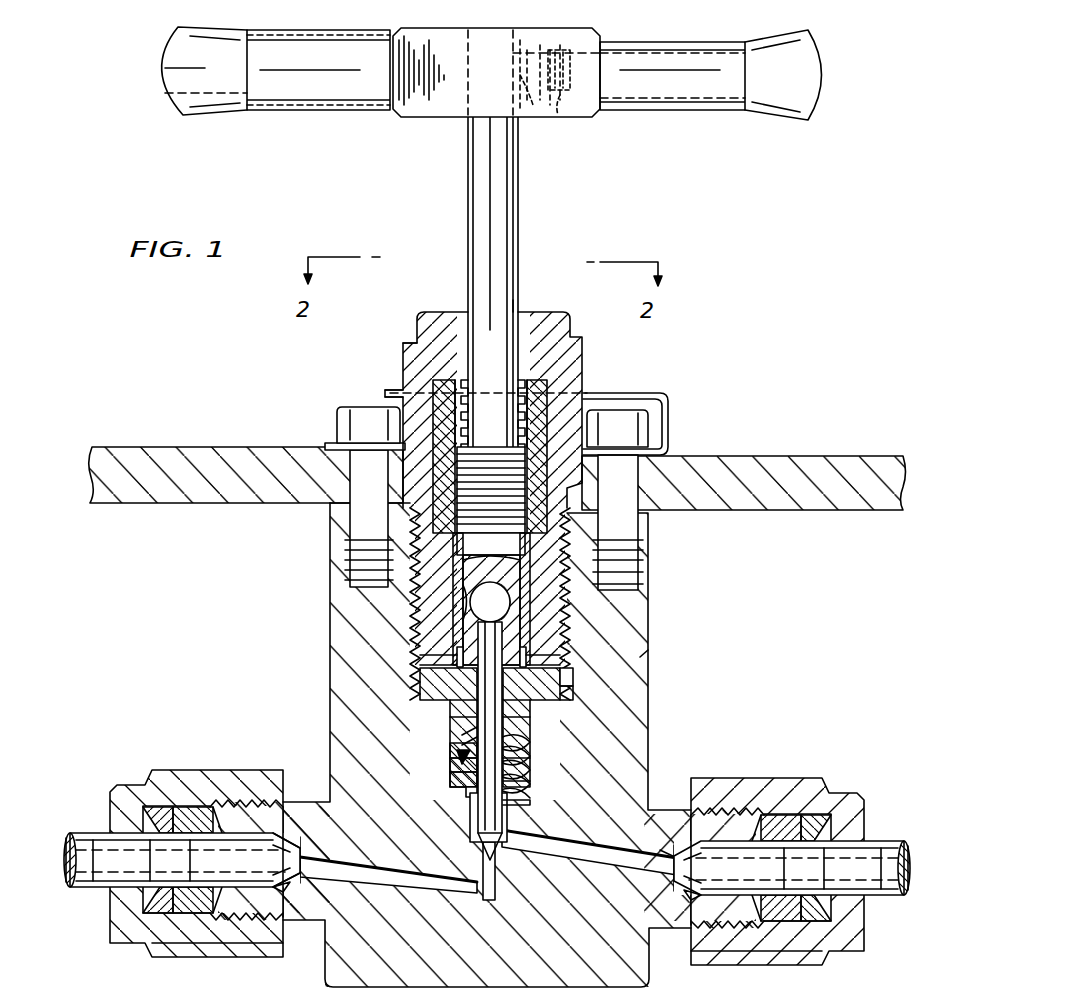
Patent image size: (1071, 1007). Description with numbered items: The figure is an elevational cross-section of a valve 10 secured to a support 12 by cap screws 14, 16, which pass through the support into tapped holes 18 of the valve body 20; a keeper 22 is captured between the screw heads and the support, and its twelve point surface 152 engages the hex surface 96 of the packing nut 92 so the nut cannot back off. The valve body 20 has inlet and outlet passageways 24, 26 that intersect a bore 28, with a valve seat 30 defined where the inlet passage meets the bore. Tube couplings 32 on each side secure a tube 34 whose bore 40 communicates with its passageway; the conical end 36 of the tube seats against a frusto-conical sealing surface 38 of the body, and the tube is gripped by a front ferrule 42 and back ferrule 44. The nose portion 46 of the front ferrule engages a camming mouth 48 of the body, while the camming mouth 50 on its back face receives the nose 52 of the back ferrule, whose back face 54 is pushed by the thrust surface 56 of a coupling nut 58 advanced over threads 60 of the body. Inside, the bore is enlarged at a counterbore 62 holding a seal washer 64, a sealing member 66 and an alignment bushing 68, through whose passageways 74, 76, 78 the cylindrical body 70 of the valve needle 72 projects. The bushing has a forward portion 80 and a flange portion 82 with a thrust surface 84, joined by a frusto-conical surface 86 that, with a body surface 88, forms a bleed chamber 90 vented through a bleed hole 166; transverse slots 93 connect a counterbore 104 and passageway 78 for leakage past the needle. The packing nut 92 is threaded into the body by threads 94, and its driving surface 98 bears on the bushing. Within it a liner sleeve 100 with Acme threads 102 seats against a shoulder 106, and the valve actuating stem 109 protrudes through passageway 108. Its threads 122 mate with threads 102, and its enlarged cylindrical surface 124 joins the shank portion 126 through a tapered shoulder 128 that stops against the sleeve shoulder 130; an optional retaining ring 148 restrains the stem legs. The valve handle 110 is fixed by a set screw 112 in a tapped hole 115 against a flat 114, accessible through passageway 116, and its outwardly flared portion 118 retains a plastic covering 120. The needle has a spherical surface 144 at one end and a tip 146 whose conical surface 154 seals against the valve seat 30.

The valve 10 is at (278, 620).
The support 12 is at (210, 455).
The cap screw 14 is at (362, 422).
The cap screw 16 is at (618, 422).
The tapped holes 18 is at (355, 522).
The valve body 20 is at (342, 670).
The keeper 22 is at (660, 394).
The inlet passageway 24 is at (362, 880).
The outlet passageway 26 is at (598, 858).
The bore 28 is at (469, 818).
The valve seat 30 is at (476, 846).
The tube couplings 32 is at (128, 742).
The tube 34 is at (102, 840).
The conical end 36 is at (659, 844).
The sealing surface 38 is at (290, 886).
The bore 40 is at (76, 886).
The front ferrule 42 is at (196, 810).
The back ferrule 44 is at (152, 812).
The nose portion 46 is at (770, 866).
The camming mouth 48 is at (246, 890).
The camming mouth 50 is at (498, 864).
The nose 52 is at (501, 864).
The back face 54 is at (140, 792).
The thrust surface 56 is at (494, 864).
The coupling nut 58 is at (172, 955).
The threads 60 is at (236, 955).
The counterbore 62 is at (450, 750).
The seal washer 64 is at (466, 792).
The sealing member 66 is at (450, 782).
The alignment bushing 68 is at (450, 706).
The cylindrical body 70 is at (507, 820).
The valve needle 72 is at (462, 736).
The circular passageway 74 is at (508, 800).
The circular passageway 76 is at (512, 779).
The circular passageway 78 is at (512, 760).
The forward portion 80 is at (450, 766).
The flange portion 82 is at (422, 692).
The thrust surface 84 is at (530, 666).
The frusto-conical surface 86 is at (527, 738).
The surface 88 is at (542, 710).
The bleed chamber 90 is at (560, 698).
The packing nut 92 is at (420, 322).
The transverse slots 93 is at (418, 660).
The threads 94 is at (412, 600).
The hex surface 96 is at (406, 350).
The driving surface 98 is at (565, 680).
The liner sleeve 100 is at (543, 392).
The Acme threads 102 is at (522, 396).
The counterbore 104 is at (462, 556).
The shoulder 106 is at (447, 386).
The passageway 108 is at (520, 296).
The valve actuating stem 109 is at (468, 230).
The valve handle 110 is at (443, 108).
The set screw 112 is at (562, 57).
The flat 114 is at (533, 117).
The tapped hole 115 is at (565, 112).
The passageway 116 is at (632, 110).
The outwardly flared portion 118 is at (183, 108).
The plastic covering 120 is at (300, 110).
The threads 122 is at (494, 462).
The cylindrical surface 124 is at (540, 616).
The shank portion 126 is at (530, 580).
The tapered shoulder 128 is at (535, 598).
The shoulder 130 is at (520, 560).
The spherical surface 144 is at (512, 604).
The tip 146 is at (498, 842).
The retaining ring 148 is at (457, 656).
The twelve point surface 152 is at (398, 392).
The conical surface 154 is at (496, 858).
The bleed hole 166 is at (646, 656).